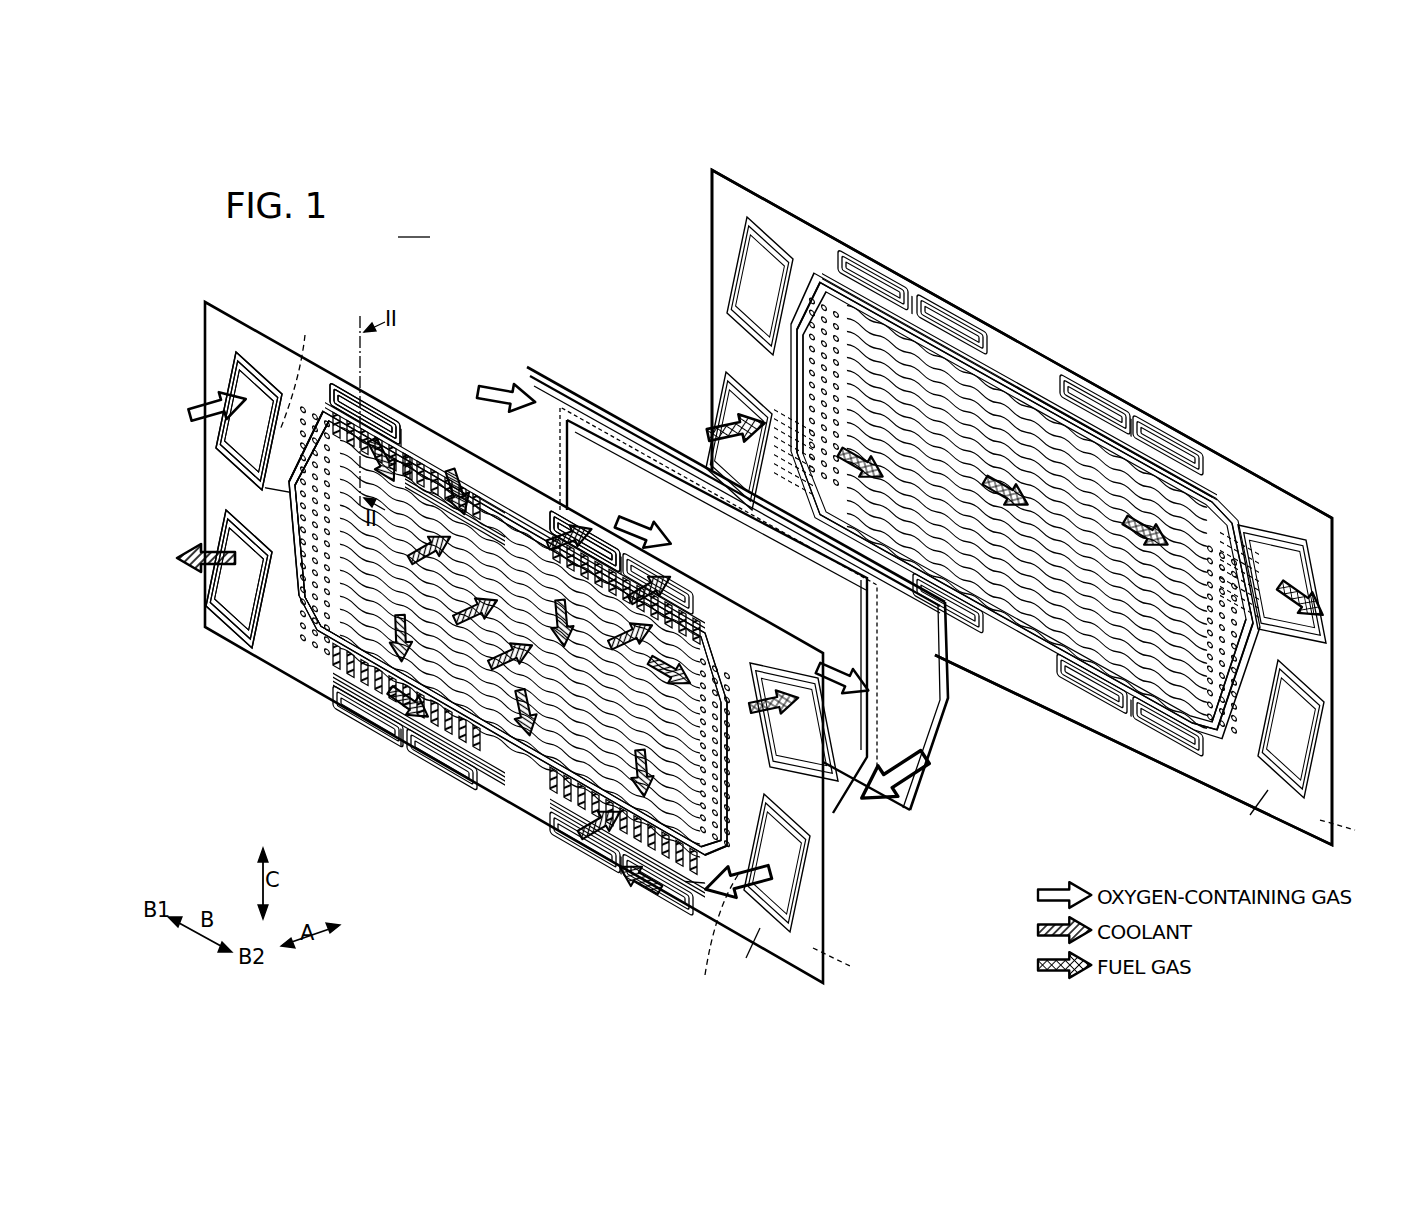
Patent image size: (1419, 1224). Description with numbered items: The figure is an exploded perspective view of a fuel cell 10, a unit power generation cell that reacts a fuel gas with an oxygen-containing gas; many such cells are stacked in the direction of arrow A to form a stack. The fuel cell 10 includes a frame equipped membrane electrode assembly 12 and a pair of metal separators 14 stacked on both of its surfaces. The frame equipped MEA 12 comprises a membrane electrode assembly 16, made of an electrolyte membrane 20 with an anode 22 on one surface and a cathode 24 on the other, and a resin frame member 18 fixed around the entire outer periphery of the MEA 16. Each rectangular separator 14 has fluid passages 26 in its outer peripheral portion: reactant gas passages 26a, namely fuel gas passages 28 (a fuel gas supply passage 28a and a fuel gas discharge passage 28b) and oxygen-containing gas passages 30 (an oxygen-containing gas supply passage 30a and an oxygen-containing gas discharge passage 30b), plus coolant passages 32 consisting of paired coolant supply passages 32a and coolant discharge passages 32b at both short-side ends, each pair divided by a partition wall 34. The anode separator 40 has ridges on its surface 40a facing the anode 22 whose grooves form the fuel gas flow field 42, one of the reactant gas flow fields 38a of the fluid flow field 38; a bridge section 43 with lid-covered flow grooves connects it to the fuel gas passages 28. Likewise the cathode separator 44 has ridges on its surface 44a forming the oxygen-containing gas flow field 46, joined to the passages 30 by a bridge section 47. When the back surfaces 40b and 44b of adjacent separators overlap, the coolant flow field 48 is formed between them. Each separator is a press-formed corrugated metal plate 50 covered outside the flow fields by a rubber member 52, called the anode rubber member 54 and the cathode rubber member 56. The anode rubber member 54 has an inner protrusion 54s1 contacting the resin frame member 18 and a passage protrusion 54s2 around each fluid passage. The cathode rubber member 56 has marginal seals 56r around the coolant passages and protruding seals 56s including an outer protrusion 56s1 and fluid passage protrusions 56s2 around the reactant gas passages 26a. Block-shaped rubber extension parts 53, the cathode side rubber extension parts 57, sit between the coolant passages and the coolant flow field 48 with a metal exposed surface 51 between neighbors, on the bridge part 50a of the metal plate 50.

The fuel cell 10 is at (414, 225).
The frame equipped membrane electrode assembly 12 is at (527, 362).
The metal separator 14 is at (1022, 507).
The membrane electrode assembly 16 is at (585, 425).
The resin frame member 18 is at (560, 400).
The electrolyte membrane 20 is at (868, 700).
The anode 22 is at (838, 667).
The cathode 24 is at (852, 723).
The fluid passage 26 is at (585, 541).
The reactant gas passage 26a is at (1318, 480).
The fuel gas passage 28 is at (239, 579).
The fuel gas supply passage 28a is at (790, 770).
The fuel gas discharge passage 28b is at (240, 590).
The oxygen-containing gas passage 30 is at (249, 421).
The oxygen-containing gas supply passage 30a is at (240, 383).
The oxygen-containing gas discharge passage 30b is at (800, 860).
The coolant passage 32 is at (1206, 812).
The coolant supply passage 32a is at (350, 380).
The coolant discharge passage 32b is at (608, 545).
The partition wall 34 is at (405, 440).
The fluid flow field 38 is at (498, 740).
The reactant gas flow field 38a is at (508, 629).
The anode separator 40 is at (708, 198).
The surface of anode separator 40a is at (1259, 818).
The surface of anode separator 40b is at (1358, 831).
The fuel gas flow field 42 is at (1045, 610).
The bridge section 43 is at (760, 400).
The cathode separator 44 is at (210, 312).
The surface of cathode separator 44a is at (850, 967).
The surface of cathode separator 44b is at (747, 957).
The oxygen-containing gas flow field 46 is at (522, 720).
The bridge section 47 is at (509, 649).
The coolant flow field 48 is at (420, 690).
The metal plate 50 is at (728, 760).
The bridge part 50a is at (337, 678).
The metal exposed surface 51 is at (420, 460).
The rubber member 52 is at (771, 569).
The rubber extension part 53 is at (408, 467).
The anode rubber member 54 is at (1055, 350).
The inner protrusion 54s1 is at (1020, 390).
The passage protrusion 54s2 is at (1248, 620).
The cathode rubber member 56 is at (232, 636).
The marginal seal 56r is at (425, 470).
The protruding seal 56s is at (312, 516).
The outer protrusion 56s1 is at (300, 620).
The fluid passage protrusion 56s2 is at (262, 430).
The cathode side rubber extension part 57 is at (405, 455).